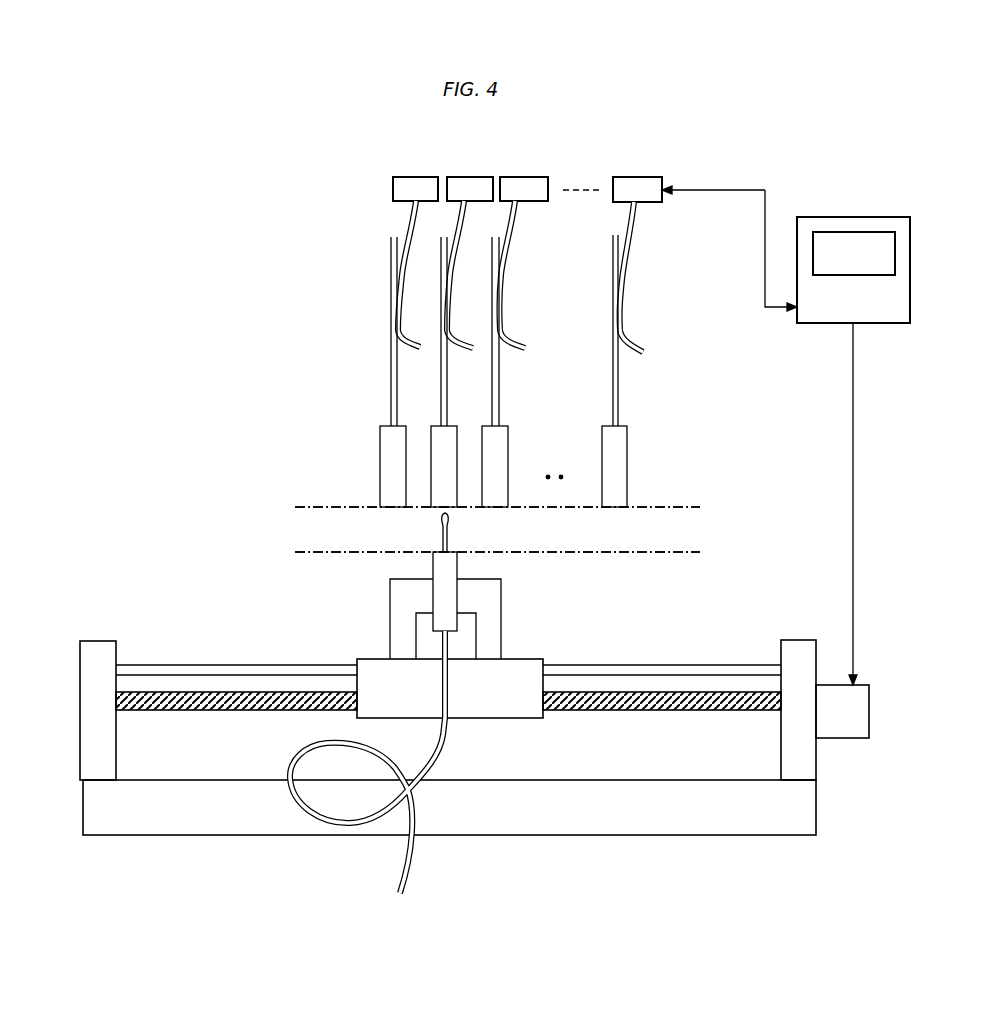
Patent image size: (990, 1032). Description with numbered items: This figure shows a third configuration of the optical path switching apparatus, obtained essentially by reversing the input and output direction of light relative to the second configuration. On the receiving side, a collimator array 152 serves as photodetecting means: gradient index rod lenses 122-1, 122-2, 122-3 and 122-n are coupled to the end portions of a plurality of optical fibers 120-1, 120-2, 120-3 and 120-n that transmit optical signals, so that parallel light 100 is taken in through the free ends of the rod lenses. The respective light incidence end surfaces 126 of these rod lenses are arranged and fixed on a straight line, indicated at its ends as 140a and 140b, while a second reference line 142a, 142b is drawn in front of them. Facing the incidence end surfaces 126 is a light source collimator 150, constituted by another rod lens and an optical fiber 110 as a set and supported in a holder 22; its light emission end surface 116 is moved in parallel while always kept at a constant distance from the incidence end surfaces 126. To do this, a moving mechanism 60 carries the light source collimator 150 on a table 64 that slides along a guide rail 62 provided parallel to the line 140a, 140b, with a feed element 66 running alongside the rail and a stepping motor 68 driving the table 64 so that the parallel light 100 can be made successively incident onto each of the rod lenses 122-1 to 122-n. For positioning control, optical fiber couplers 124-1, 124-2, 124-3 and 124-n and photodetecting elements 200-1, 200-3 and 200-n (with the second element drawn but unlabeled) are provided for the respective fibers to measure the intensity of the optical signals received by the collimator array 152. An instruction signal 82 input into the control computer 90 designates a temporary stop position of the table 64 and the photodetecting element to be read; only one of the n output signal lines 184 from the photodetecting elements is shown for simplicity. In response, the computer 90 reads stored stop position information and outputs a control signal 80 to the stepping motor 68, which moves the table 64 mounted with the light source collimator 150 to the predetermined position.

The photodetecting element 200-1 is at (392, 188).
The photodetecting element 200-3 is at (537, 203).
The photodetecting element 200-n is at (651, 203).
The optical fiber coupler 124-1 is at (391, 312).
The optical fiber coupler 124-2 is at (442, 297).
The optical fiber coupler 124-3 is at (507, 303).
The optical fiber coupler 124-n is at (626, 283).
The optical fiber 120-1 is at (391, 388).
The optical fiber 120-2 is at (442, 372).
The optical fiber 120-3 is at (500, 394).
The optical fiber 120-n is at (619, 398).
The gradient index rod lens 122-1 is at (388, 436).
The gradient index rod lens 122-2 is at (440, 486).
The gradient index rod lens 122-3 is at (500, 445).
The gradient index rod lens 122-n is at (622, 445).
The output signal line 184 is at (767, 200).
The control computer 90 is at (911, 308).
The instruction signal 82 is at (893, 330).
The control signal 80 is at (855, 540).
The collimator array 152 is at (732, 465).
The straight line 140a is at (471, 505).
The straight line 140b is at (524, 504).
The needle reference line 142a is at (471, 550).
The needle reference line 142b is at (524, 548).
The parallel light 100 is at (440, 534).
The light incidence end surface 126 is at (452, 509).
The light emission end surface 116 is at (436, 552).
The needle holder 22 is at (458, 568).
The table 64 is at (370, 662).
The light source collimator 150 is at (535, 627).
The moving mechanism 60 is at (710, 640).
The guide rail 62 is at (228, 668).
The feed screw 66 is at (240, 712).
The optical fiber 110 is at (435, 743).
The stepping motor 68 is at (869, 698).